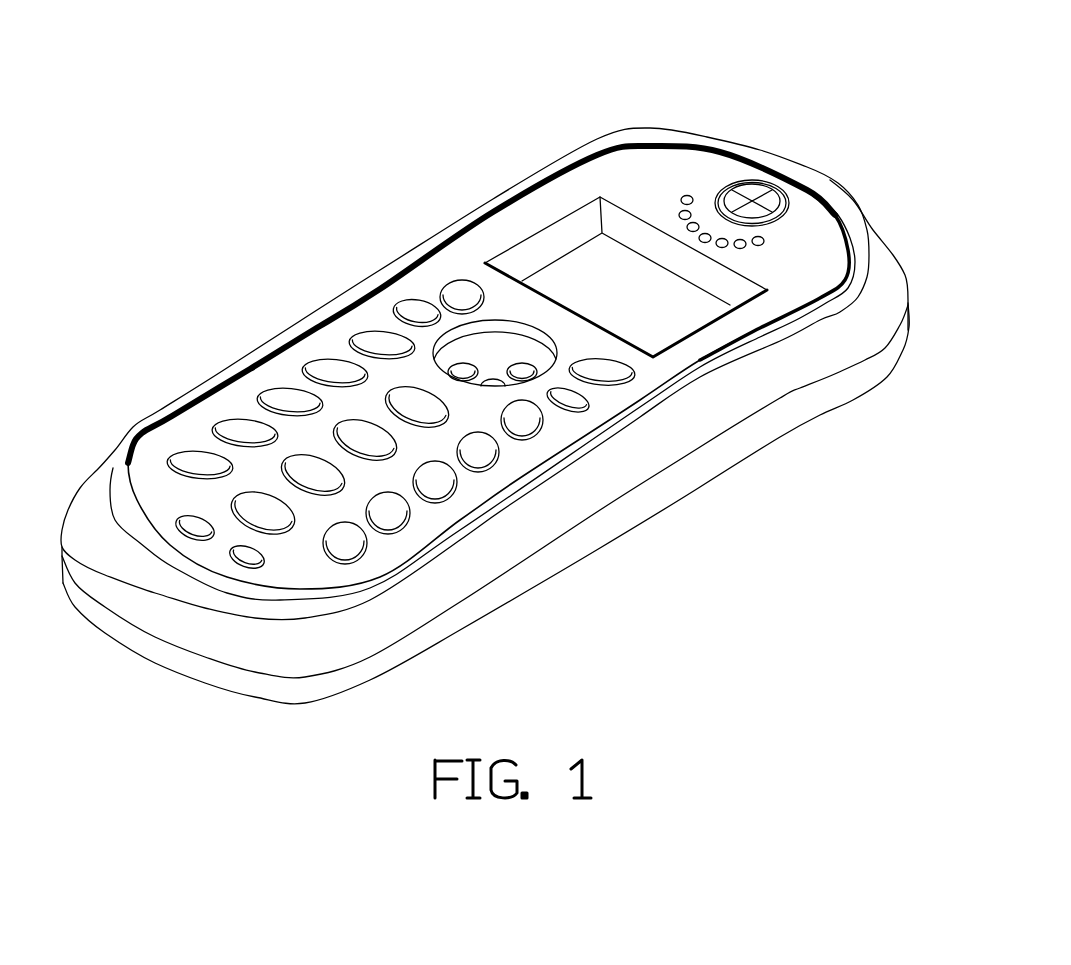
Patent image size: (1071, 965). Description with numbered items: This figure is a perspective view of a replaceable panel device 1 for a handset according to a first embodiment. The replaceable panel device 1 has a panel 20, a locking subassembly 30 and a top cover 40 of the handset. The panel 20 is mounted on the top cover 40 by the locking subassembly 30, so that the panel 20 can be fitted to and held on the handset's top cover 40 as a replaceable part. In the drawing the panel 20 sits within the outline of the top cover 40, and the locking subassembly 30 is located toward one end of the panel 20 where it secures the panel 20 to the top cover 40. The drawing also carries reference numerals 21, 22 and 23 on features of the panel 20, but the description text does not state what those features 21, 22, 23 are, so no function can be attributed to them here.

The replaceable panel device 1 is at (718, 37).
The panel 20 is at (590, 181).
The keys 21 is at (407, 308).
The display window 22 is at (515, 255).
The indicator holes 23 is at (688, 197).
The locking subassembly 30 is at (779, 182).
The top cover 40 is at (878, 246).